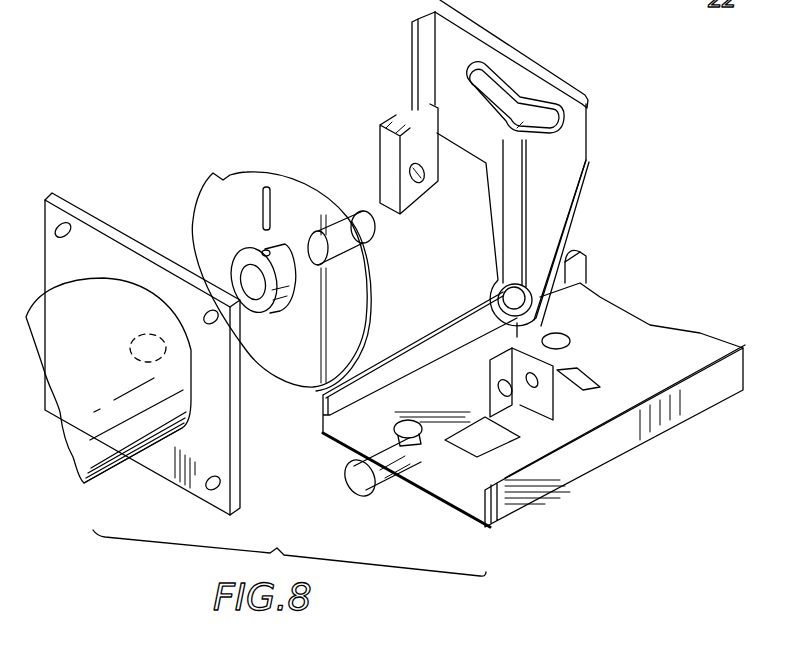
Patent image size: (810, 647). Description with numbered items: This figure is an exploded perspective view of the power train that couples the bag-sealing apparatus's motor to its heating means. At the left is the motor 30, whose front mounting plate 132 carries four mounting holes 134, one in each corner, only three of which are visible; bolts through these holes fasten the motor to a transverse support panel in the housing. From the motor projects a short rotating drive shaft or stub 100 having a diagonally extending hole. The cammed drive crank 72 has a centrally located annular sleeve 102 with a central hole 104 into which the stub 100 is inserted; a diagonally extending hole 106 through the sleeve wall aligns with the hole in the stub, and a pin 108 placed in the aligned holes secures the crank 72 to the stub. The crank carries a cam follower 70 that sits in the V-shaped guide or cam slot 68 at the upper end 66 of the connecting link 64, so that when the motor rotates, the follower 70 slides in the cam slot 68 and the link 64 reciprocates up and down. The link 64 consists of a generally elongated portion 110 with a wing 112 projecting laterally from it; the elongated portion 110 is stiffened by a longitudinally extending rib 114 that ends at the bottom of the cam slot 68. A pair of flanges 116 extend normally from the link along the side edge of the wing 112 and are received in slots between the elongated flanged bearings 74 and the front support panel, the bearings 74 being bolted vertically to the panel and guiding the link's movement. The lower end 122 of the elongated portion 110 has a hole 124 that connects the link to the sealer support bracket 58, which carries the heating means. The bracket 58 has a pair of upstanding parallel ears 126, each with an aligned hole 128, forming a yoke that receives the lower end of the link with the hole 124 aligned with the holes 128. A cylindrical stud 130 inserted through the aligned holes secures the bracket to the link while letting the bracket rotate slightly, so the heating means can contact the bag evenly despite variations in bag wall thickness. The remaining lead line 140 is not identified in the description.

The motor means 30 is at (120, 447).
The sealer support bracket 58 is at (640, 333).
The connecting link 64 is at (520, 92).
The upper end of the connecting link 66 is at (473, 50).
The V-shaped cam slot 68 is at (542, 118).
The cam follower 70 is at (362, 238).
The cammed drive crank 72 is at (242, 183).
The flanged bearings 74 is at (380, 150).
The drive shaft stub 100 is at (108, 380).
The annular sleeve 102 is at (273, 297).
The central hole 104 is at (245, 277).
The diagonally extending hole 106 is at (268, 252).
The pin 108 is at (277, 186).
The elongated portion 110 is at (556, 231).
The wing 112 is at (443, 62).
The longitudinally extending rib 114 is at (517, 197).
The flanges 116 is at (412, 35).
The lower end of the elongated portion 122 is at (576, 278).
The hole 124 is at (500, 295).
The upstanding parallel ears 126 is at (493, 373).
The aligned holes 128 is at (509, 400).
The cylindrical stud 130 is at (372, 488).
The front mounting plate 132 is at (108, 243).
The mounting holes 134 is at (63, 226).
The flange 140 is at (672, 360).